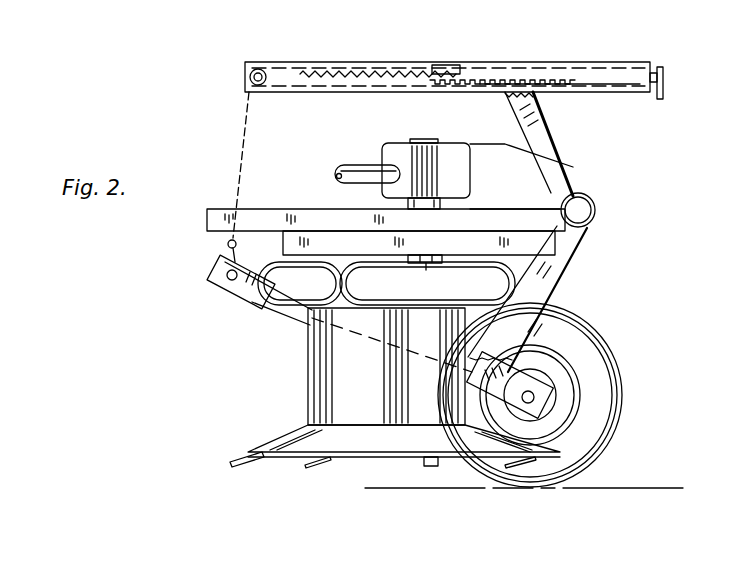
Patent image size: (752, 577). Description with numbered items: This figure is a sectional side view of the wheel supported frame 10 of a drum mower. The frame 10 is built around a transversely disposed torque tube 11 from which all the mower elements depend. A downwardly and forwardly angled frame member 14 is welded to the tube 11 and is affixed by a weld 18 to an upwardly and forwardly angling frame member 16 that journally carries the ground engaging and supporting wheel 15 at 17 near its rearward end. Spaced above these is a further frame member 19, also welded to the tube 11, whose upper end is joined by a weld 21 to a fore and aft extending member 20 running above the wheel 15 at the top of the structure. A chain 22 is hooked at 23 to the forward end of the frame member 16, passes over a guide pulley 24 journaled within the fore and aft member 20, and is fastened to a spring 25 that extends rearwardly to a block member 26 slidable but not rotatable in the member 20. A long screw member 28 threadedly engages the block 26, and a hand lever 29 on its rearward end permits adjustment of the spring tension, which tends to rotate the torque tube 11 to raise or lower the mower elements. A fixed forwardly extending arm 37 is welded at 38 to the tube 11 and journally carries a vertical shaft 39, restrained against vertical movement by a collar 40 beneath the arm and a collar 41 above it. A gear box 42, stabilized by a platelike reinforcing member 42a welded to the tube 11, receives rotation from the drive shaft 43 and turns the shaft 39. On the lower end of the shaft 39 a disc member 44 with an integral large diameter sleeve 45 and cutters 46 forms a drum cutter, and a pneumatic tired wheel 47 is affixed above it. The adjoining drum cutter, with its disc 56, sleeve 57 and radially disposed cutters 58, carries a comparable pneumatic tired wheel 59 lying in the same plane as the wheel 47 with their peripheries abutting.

The wheel supported frame 10 is at (618, 196).
The tube member 11 is at (600, 210).
The frame member 14 is at (562, 286).
The ground engaging and supporting wheel 15 is at (616, 410).
The frame member 16 is at (300, 318).
The wheel journal 17 is at (540, 402).
The weld 18 is at (548, 352).
The frame member 19 is at (555, 122).
The fore and aft extending member 20 is at (443, 65).
The weld 21 is at (518, 96).
The chain 22 is at (313, 62).
The hook 23 is at (228, 277).
The guide pulley 24 is at (250, 75).
The spring 25 is at (385, 68).
The block member 26 is at (480, 66).
The screw member 28 is at (565, 70).
The hand lever 29 is at (667, 80).
The arm 37 is at (278, 209).
The weld 38 is at (580, 237).
The vertical shaft 39 is at (416, 263).
The collar 40 is at (430, 270).
The collar 41 is at (432, 198).
The gear box 42 is at (400, 143).
The platelike reinforcing member 42a is at (521, 176).
The drive shaft 43 is at (350, 165).
The disc member 44 is at (410, 460).
The large diameter sleeve 45 is at (426, 393).
The cutters 46 is at (322, 463).
The pneumatic tired wheel 47 is at (427, 283).
The disc 56 is at (292, 458).
The large diameter sleeve 57 is at (308, 385).
The cutters 58 is at (234, 462).
The pneumatic tired wheel 59 is at (300, 283).